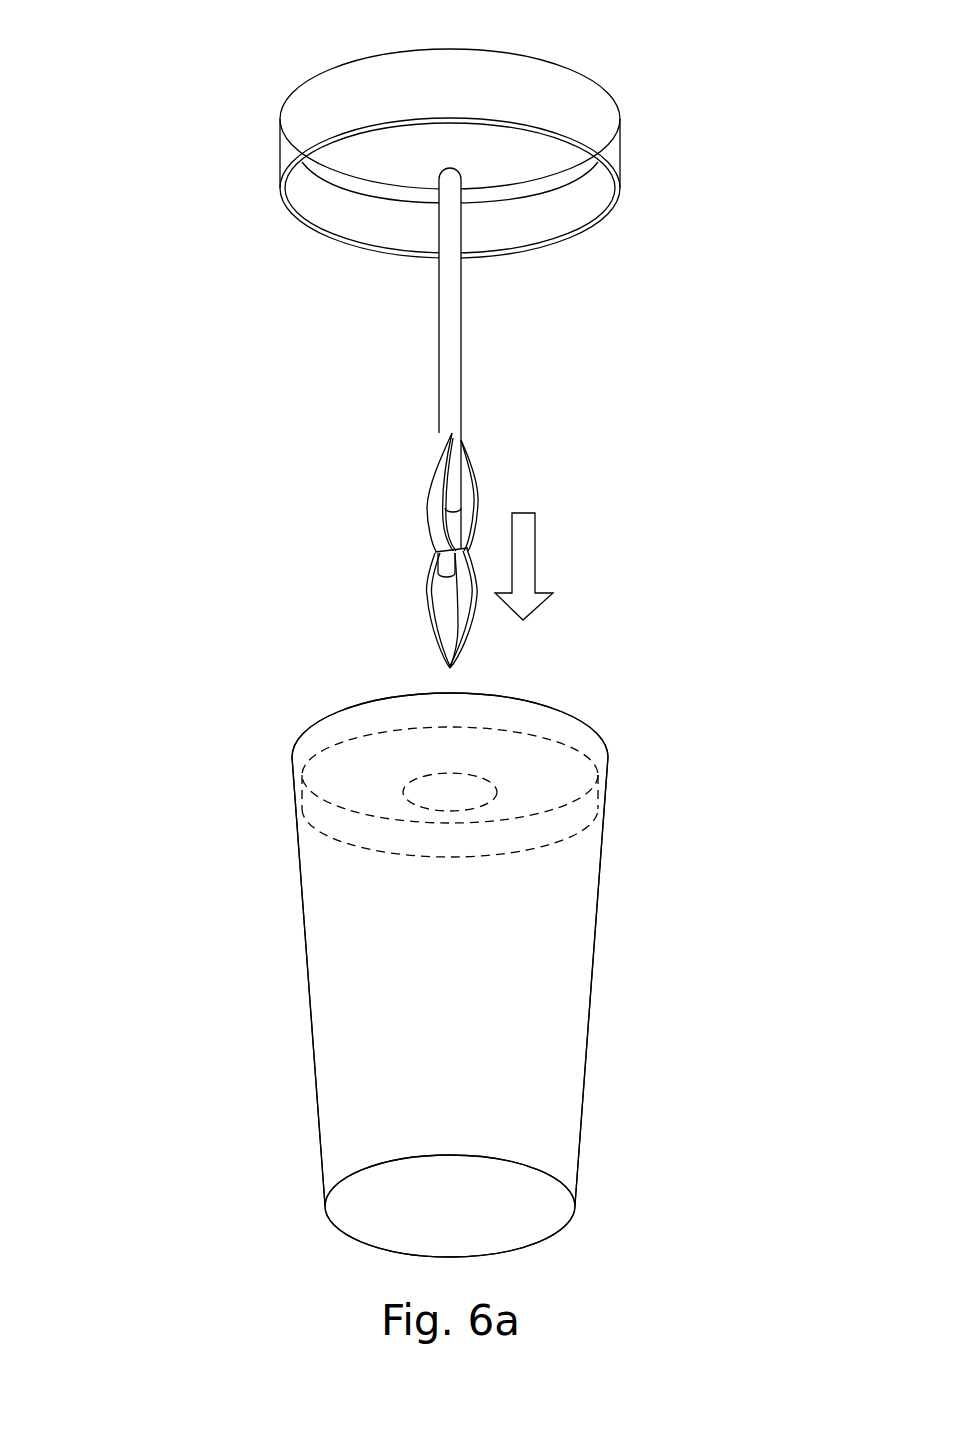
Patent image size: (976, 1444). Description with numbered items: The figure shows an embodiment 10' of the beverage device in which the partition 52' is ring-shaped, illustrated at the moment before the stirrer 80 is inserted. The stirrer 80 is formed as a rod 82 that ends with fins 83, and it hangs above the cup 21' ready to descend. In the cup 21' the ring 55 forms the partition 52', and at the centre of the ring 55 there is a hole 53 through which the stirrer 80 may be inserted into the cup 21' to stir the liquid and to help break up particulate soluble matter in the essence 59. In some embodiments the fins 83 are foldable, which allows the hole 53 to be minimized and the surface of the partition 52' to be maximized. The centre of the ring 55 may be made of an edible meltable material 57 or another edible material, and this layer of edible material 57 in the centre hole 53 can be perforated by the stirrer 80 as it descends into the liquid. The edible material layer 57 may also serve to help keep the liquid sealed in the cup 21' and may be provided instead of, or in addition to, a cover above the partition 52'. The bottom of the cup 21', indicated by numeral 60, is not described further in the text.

The embodiment 10' is at (323, 130).
The stirrer 80 is at (473, 322).
The rod 82 is at (415, 483).
The fins 83 is at (440, 531).
The essence 59 is at (333, 772).
The edible meltable material 57 is at (403, 803).
The ring 55 is at (582, 833).
The hole 53 is at (448, 803).
The partition 52' is at (450, 921).
The cup 21' is at (525, 975).
The cup bottom 60 is at (353, 1208).